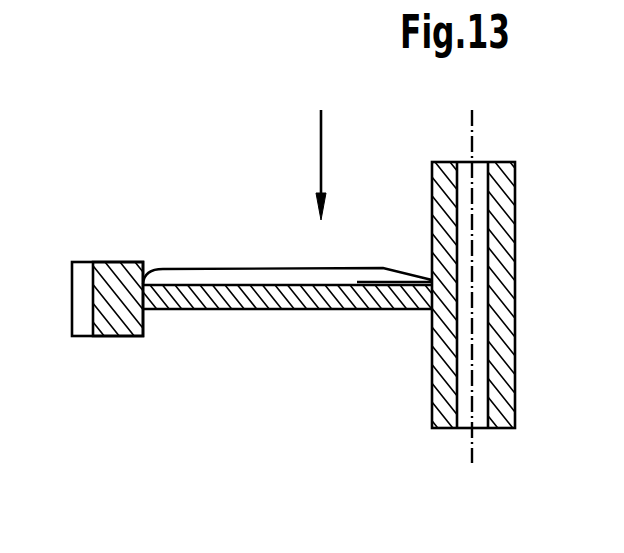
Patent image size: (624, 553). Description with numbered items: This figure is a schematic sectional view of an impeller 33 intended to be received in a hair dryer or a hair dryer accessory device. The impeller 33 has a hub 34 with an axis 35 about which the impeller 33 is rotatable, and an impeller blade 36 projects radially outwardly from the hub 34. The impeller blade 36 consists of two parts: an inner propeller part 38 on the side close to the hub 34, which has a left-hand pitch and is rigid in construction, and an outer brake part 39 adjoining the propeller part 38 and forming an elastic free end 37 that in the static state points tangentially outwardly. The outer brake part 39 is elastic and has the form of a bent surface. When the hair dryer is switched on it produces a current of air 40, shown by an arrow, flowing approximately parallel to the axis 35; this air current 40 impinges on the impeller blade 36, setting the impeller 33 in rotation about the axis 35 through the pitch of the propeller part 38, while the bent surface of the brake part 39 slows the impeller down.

The impeller 33 is at (173, 228).
The hub 34 is at (440, 212).
The axis 35 is at (472, 441).
The impeller blade 36 is at (250, 309).
The elastic free end 37 is at (97, 357).
The inner propeller part 38 is at (197, 290).
The outer brake part 39 is at (103, 275).
The current of air 40 is at (318, 155).